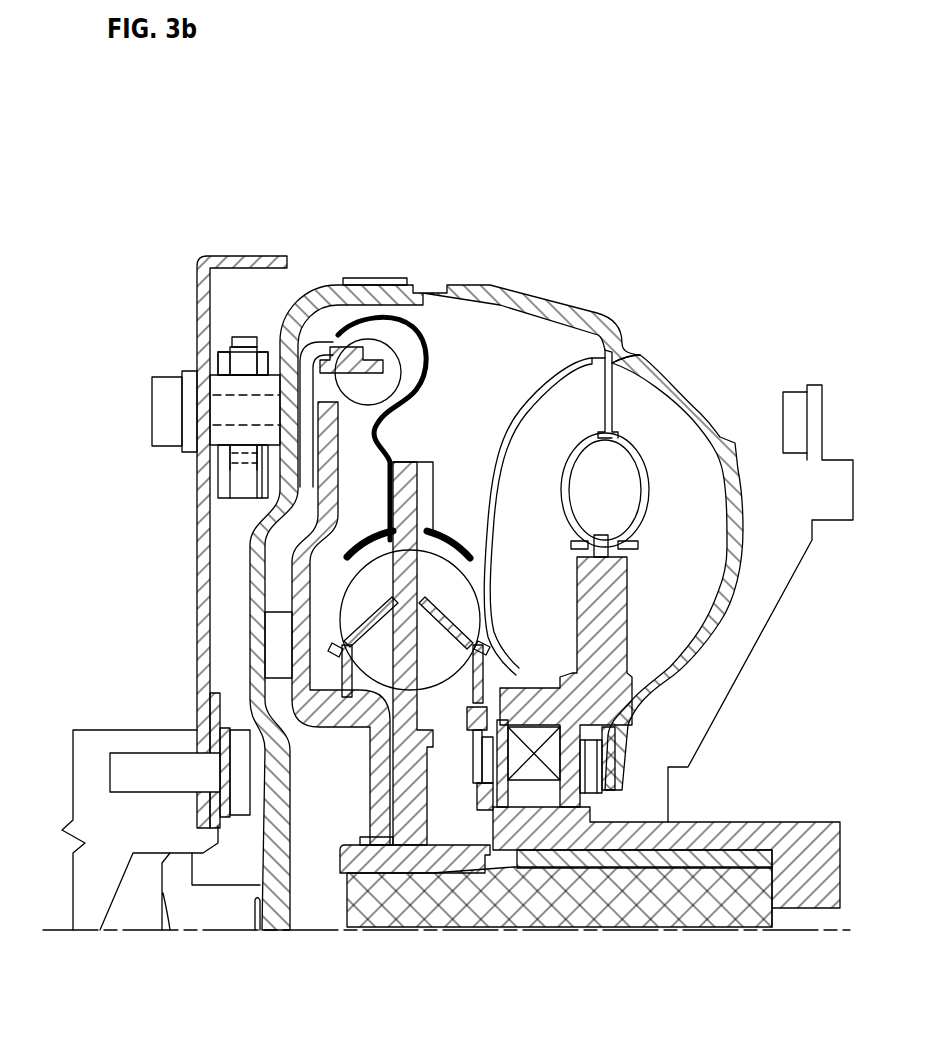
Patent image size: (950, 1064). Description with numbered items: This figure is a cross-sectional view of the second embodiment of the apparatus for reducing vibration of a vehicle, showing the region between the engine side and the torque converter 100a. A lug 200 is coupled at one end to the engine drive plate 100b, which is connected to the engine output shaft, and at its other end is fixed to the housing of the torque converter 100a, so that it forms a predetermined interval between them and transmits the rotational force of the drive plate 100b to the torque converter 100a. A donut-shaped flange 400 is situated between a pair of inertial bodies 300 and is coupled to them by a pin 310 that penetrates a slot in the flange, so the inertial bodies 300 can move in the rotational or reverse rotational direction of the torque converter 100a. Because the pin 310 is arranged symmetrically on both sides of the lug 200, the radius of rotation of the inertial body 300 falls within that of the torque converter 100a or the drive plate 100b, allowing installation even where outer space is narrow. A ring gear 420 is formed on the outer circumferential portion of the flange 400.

The torque converter 100a is at (686, 369).
The engine drive plate 100b is at (203, 593).
The lug 200 is at (230, 412).
The inertial body 300 is at (268, 348).
The pin 310 is at (223, 458).
The flange 400 is at (240, 360).
The ring gear 420 is at (247, 336).